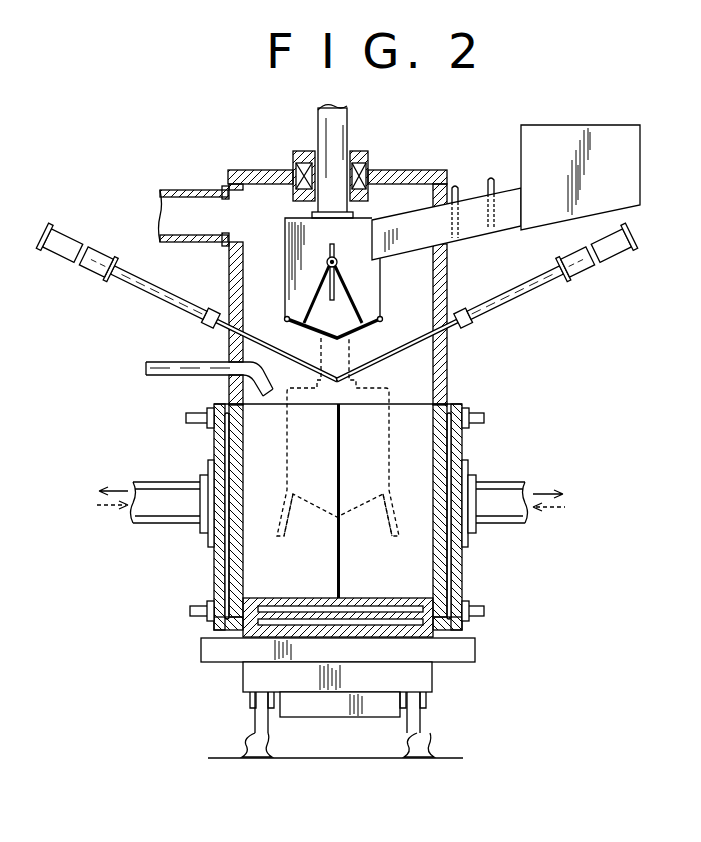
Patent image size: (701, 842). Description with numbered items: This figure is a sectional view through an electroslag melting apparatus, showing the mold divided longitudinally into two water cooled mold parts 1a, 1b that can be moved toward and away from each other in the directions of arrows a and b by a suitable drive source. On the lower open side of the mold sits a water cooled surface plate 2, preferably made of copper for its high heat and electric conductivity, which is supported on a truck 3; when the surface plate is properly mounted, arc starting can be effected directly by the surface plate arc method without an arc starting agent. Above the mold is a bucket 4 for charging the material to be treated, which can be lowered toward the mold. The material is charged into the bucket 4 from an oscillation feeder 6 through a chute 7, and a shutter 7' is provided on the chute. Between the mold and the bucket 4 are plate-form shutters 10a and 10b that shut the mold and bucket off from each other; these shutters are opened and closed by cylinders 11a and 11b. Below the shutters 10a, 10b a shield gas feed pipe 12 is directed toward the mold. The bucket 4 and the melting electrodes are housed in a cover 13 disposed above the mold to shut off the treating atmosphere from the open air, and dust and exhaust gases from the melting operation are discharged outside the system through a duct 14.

The mold part 1a is at (455, 448).
The mold part 1b is at (214, 578).
The water cooled surface plate 2 is at (420, 632).
The truck 3 is at (266, 652).
The bucket 4 is at (374, 291).
The oscillation feeder 6 is at (625, 150).
The chute 7 is at (446, 228).
The shutter 7' is at (477, 177).
The shutter 10a is at (401, 350).
The shutter 10b is at (265, 338).
The cylinder 11a is at (583, 265).
The cylinder 11b is at (100, 268).
The shield gas feed pipe 12 is at (177, 378).
The cover 13 is at (401, 170).
The duct 14 is at (209, 190).